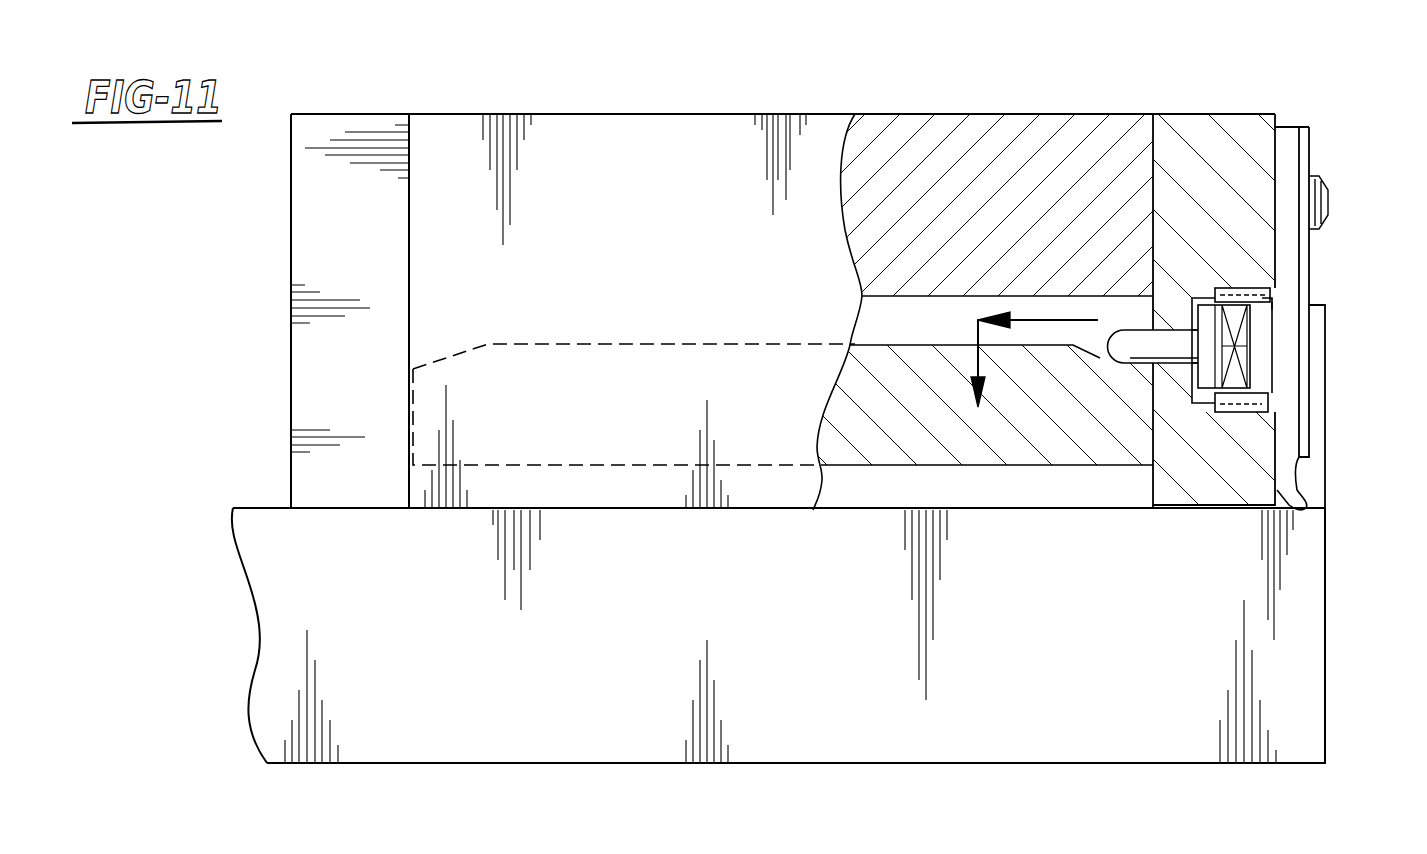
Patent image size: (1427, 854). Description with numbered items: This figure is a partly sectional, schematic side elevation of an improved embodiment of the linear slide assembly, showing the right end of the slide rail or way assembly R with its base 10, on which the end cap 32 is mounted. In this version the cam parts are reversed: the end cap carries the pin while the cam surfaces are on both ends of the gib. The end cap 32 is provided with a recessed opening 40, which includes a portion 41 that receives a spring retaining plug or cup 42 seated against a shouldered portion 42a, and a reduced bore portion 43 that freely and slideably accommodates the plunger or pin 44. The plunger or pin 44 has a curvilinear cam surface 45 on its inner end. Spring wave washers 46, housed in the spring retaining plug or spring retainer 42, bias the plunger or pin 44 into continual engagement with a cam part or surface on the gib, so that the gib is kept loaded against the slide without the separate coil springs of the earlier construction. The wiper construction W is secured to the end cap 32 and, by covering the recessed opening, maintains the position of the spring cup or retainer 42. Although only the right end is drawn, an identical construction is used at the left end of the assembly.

The base 10 is at (1010, 737).
The slide rail or way assembly R is at (757, 764).
The end cap 32 is at (355, 178).
The recessed opening 40 is at (1272, 273).
The portion of recessed opening 41 is at (1268, 278).
The spring retaining plug 42 is at (1243, 400).
The shouldered portion 42a is at (1237, 292).
The reduced bore portion 43 is at (1187, 303).
The plunger or pin 44 is at (1167, 322).
The curvilinear cam surface 45 is at (1108, 328).
The spring wave washers 46 is at (490, 346).
The wiper assembly W is at (1297, 410).